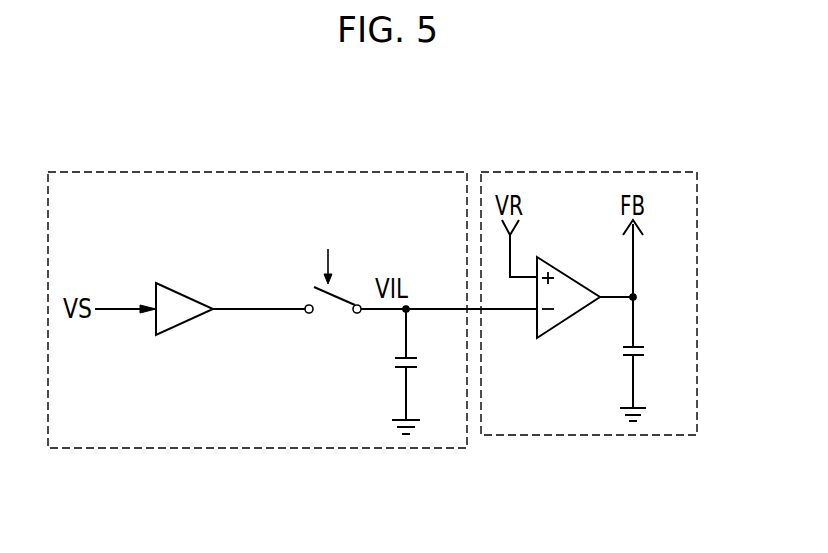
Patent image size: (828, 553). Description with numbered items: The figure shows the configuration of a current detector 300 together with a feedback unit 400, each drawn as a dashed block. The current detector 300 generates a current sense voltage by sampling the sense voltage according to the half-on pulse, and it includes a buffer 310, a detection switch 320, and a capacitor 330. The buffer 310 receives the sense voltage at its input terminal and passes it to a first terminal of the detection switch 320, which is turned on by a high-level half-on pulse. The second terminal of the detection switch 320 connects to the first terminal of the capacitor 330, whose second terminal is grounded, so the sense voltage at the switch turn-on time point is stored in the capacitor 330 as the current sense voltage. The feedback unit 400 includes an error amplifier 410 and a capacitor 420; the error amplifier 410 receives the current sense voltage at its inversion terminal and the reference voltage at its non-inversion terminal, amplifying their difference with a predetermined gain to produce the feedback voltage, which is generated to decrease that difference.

The current detector 300 is at (368, 172).
The buffer 310 is at (175, 328).
The detection switch 320 is at (329, 320).
The capacitor 330 is at (427, 371).
The feedback unit 400 is at (588, 172).
The error amplifier 410 is at (580, 312).
The capacitor 420 is at (654, 359).